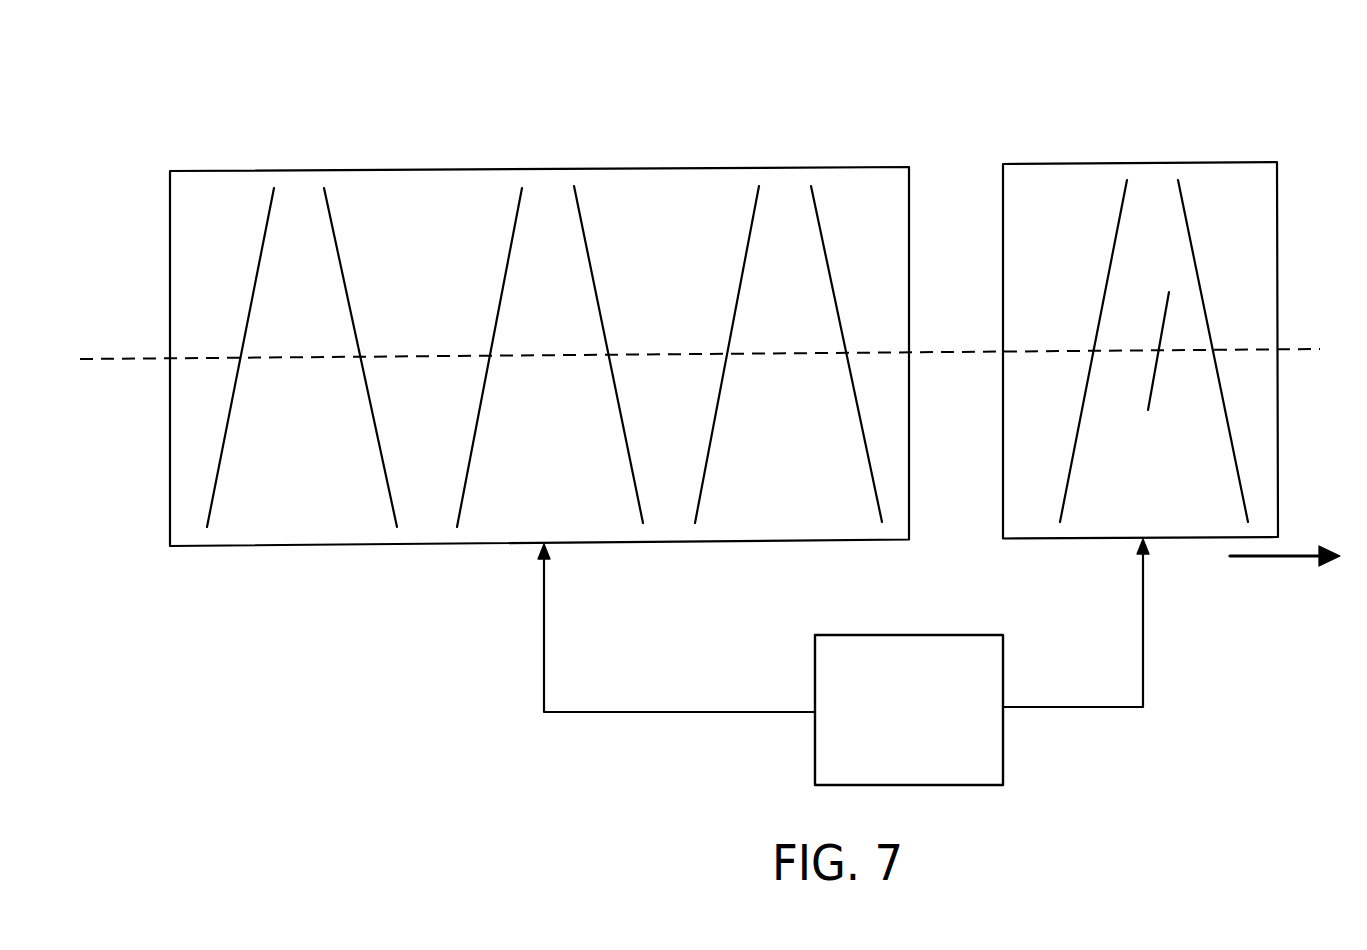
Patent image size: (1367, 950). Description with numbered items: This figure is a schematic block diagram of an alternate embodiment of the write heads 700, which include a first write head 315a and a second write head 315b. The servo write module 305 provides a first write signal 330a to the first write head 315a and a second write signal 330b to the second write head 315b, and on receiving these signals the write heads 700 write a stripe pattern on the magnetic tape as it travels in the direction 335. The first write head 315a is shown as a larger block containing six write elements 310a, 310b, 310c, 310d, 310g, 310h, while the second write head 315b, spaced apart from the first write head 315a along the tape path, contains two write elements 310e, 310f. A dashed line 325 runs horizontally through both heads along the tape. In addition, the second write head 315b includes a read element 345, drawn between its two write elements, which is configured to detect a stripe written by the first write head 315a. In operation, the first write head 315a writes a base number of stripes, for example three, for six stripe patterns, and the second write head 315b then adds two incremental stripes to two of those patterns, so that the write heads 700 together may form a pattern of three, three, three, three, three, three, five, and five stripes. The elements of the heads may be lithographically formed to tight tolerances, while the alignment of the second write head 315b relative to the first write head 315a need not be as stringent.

The write heads 700 is at (92, 92).
The first write head 315a is at (168, 243).
The second write head 315b is at (1275, 162).
The tape centerline 325 is at (137, 358).
The write element 310a is at (818, 205).
The write element 310b is at (753, 207).
The write element 310c is at (580, 207).
The write element 310d is at (518, 211).
The write element 310e is at (1184, 202).
The write element 310f is at (1122, 207).
The write element 310g is at (328, 211).
The write element 310h is at (266, 211).
The read element 345 is at (1160, 340).
The first write signal 330a is at (542, 625).
The second write signal 330b is at (1142, 662).
The servo write module 305 is at (909, 710).
The direction 335 is at (1268, 562).